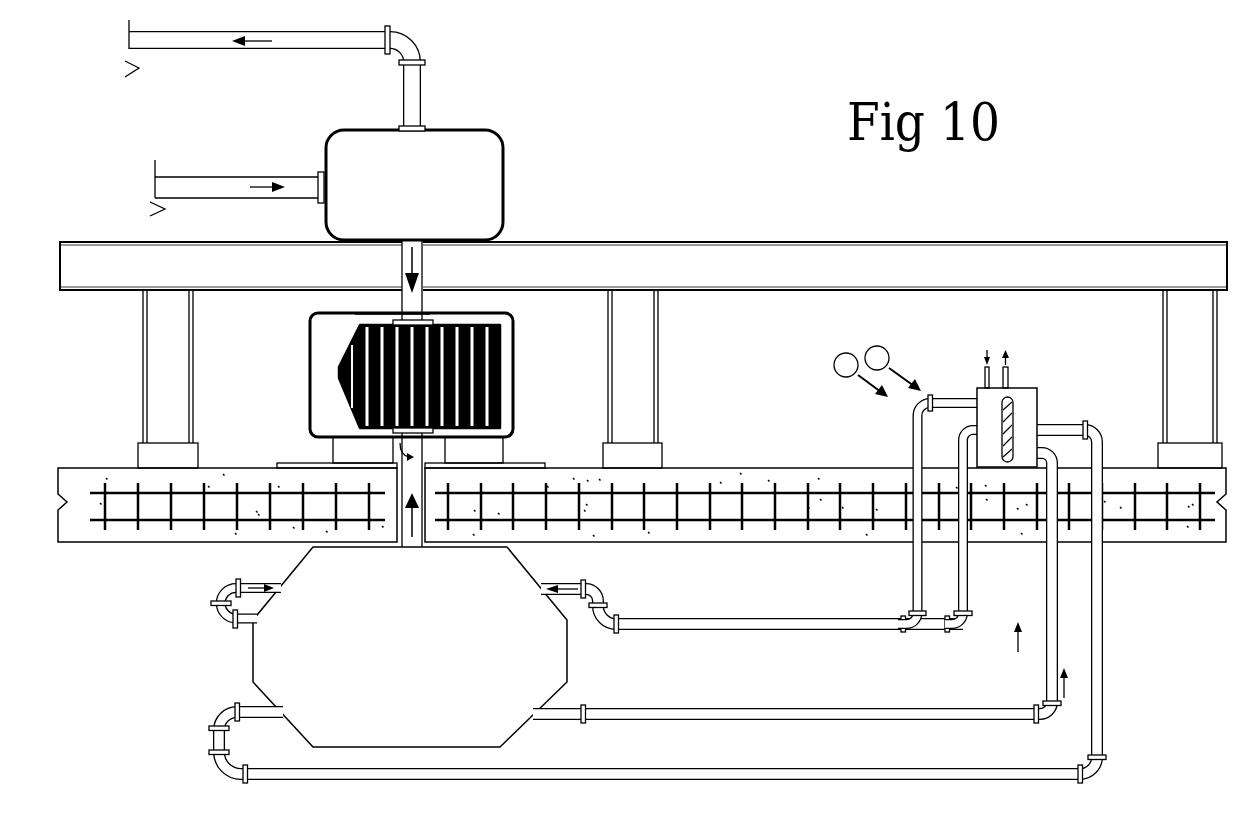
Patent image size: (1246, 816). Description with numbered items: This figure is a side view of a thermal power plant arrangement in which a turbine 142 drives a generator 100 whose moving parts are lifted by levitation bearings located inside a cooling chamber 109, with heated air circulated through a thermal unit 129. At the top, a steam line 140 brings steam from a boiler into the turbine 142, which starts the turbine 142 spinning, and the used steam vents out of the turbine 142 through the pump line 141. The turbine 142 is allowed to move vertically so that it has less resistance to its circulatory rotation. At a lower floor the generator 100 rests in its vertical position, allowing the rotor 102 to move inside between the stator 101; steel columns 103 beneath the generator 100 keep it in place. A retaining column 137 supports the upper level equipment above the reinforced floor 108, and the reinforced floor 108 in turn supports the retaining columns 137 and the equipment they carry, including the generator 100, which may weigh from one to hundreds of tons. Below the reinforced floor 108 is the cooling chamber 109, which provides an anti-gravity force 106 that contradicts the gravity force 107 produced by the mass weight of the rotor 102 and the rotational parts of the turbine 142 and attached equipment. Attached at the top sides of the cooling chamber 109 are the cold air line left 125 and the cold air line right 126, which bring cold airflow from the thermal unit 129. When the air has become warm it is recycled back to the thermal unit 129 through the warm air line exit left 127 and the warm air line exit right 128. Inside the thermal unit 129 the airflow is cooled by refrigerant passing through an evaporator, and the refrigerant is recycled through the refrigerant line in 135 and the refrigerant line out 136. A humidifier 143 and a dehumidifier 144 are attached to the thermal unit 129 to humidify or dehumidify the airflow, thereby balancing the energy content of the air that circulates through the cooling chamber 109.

The generator 100 is at (310, 376).
The stator 101 is at (370, 322).
The rotor 102 is at (507, 315).
The steel columns 103 is at (335, 450).
The anti-gravity force 106 is at (410, 530).
The gravity force 107 is at (424, 252).
The reinforced floor 108 is at (852, 470).
The cooling chamber 109 is at (567, 665).
The cold air line left 125 is at (214, 595).
The cold air line right 126 is at (605, 586).
The warm air line exit left 127 is at (733, 768).
The warm air line exit right 128 is at (762, 708).
The thermal unit 129 is at (1040, 404).
The refrigerant line in 135 is at (985, 385).
The refrigerant line out 136 is at (1010, 375).
The retaining column 137 is at (608, 425).
The steam line 140 is at (218, 177).
The pump line 141 is at (424, 88).
The turbine 142 is at (503, 185).
The humidifier 143 is at (868, 348).
The dehumidifier 144 is at (834, 362).